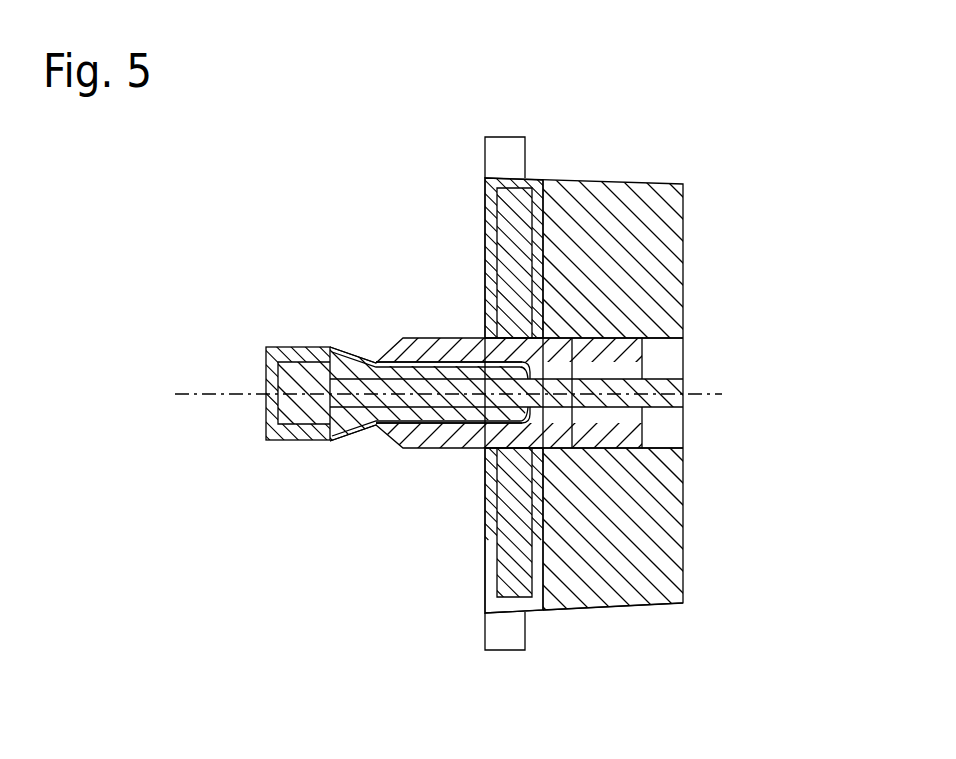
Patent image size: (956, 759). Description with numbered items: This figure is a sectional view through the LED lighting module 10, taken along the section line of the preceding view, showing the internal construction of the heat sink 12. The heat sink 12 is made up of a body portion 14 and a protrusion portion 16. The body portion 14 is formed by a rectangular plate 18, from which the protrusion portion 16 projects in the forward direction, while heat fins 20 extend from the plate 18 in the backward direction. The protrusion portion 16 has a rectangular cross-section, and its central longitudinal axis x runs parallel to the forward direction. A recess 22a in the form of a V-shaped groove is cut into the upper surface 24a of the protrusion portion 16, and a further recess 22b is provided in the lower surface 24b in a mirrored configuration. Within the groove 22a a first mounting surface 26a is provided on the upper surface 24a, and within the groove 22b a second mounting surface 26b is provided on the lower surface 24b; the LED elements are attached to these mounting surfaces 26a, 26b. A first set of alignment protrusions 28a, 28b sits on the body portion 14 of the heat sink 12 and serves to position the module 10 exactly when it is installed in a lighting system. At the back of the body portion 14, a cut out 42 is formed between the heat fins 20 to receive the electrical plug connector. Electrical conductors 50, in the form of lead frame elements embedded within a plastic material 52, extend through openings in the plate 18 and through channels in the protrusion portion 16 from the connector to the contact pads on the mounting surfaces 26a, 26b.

The LED lighting module 10 is at (778, 201).
The heat sink 12 is at (365, 155).
The body portion 14 is at (573, 611).
The protrusion portion 16 is at (277, 441).
The rectangular plate 18 is at (484, 583).
The heat fins 20 is at (686, 517).
The recess 22a is at (305, 302).
The further recess 22b is at (377, 460).
The upper surface 24a is at (276, 345).
The lower surface 24b is at (447, 449).
The first mounting surface 26a is at (356, 353).
The second mounting surface 26b is at (360, 447).
The alignment protrusion 28a is at (517, 155).
The alignment protrusion 28b is at (502, 642).
The cut out 42 is at (678, 360).
The electrical conductors 50 is at (424, 361).
The plastic material 52 is at (478, 338).
The central longitudinal axis x is at (702, 393).